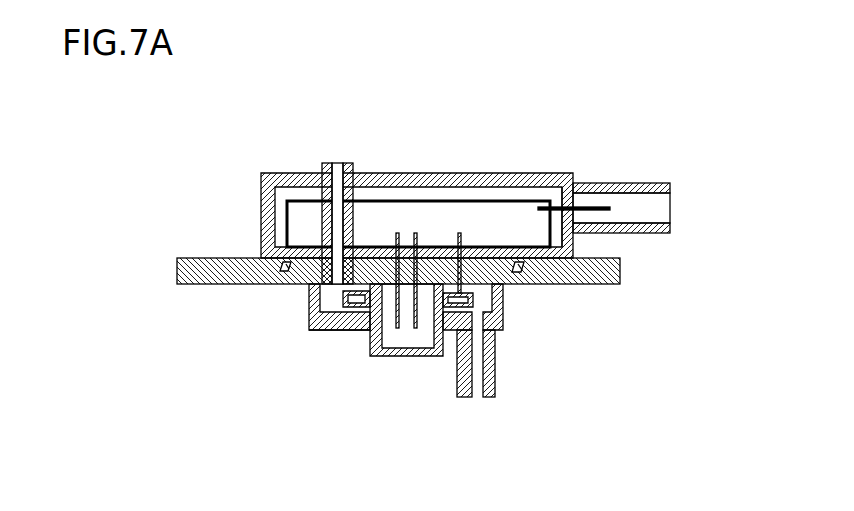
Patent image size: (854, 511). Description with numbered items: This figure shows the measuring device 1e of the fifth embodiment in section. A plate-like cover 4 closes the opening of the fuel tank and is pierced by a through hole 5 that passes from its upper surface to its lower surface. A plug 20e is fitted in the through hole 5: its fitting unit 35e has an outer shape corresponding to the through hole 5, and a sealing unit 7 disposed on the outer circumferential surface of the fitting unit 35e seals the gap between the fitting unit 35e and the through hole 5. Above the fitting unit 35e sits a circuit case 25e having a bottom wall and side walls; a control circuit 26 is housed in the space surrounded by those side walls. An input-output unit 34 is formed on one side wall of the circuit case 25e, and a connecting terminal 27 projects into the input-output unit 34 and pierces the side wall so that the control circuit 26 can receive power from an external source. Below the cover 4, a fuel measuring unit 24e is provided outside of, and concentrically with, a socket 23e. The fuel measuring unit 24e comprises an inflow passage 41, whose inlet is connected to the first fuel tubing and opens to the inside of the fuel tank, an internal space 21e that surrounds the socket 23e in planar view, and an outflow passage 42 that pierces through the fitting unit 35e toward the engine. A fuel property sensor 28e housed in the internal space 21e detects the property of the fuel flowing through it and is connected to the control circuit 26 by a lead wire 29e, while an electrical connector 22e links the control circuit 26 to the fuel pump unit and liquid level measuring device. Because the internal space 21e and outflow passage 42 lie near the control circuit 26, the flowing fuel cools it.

The measuring device 1e is at (232, 164).
The cover 4 is at (177, 272).
The sealing unit 7 is at (238, 258).
The fitting unit 35e is at (298, 248).
The outflow passage 42 is at (352, 163).
The plug 20e is at (387, 245).
The lead wire 29e is at (460, 244).
The control circuit 26 is at (465, 222).
The circuit case 25e is at (573, 172).
The connecting terminal 27 is at (602, 207).
The input-output unit 34 is at (650, 183).
The electrical connector 22e is at (410, 328).
The fuel measuring unit 24e is at (306, 321).
The fuel property sensor 28e is at (322, 333).
The internal space 21e is at (343, 328).
The socket 23e is at (370, 338).
The through hole 5 is at (502, 284).
The inflow passage 41 is at (494, 385).